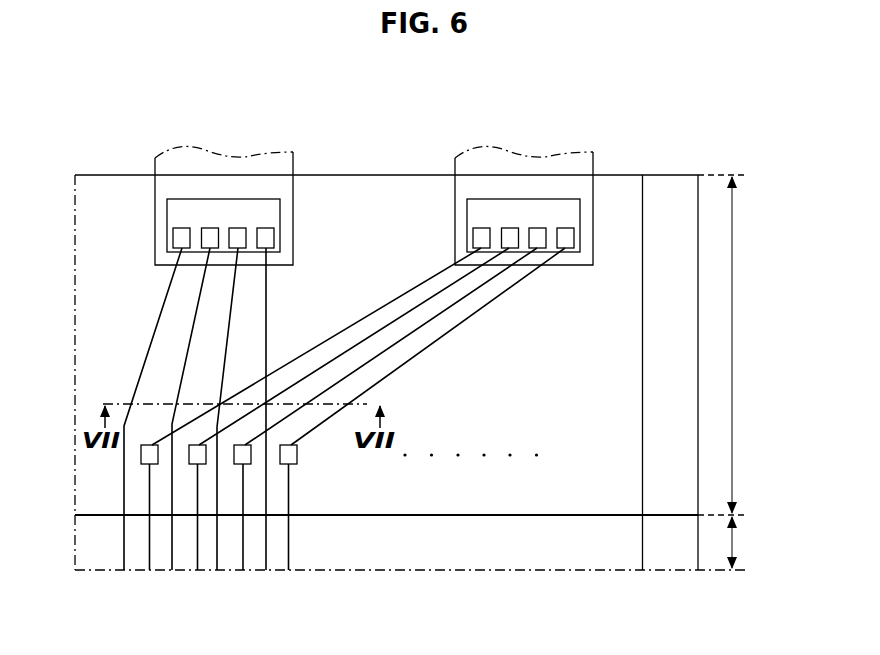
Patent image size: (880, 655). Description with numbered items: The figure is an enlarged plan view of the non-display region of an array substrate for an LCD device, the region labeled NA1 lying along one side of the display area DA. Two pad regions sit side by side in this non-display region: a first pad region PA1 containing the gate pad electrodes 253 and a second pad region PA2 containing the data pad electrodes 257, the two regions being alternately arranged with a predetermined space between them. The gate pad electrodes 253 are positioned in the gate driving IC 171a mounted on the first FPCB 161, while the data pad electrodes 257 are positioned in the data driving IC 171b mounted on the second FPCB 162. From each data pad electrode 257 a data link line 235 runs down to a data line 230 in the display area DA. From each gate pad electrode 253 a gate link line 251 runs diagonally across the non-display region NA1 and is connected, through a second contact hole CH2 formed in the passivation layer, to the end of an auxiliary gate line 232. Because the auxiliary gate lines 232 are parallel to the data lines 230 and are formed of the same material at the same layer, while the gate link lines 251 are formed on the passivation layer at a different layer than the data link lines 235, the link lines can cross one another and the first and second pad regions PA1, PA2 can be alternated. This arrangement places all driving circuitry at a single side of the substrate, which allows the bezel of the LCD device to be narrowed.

The first FPCB 161 is at (488, 163).
The second FPCB 162 is at (178, 163).
The gate driving IC 171a is at (530, 210).
The data driving IC 171b is at (240, 210).
The gate pad electrode 253 is at (477, 240).
The data pad electrode 257 is at (177, 240).
The gate link line 251 is at (465, 323).
The data link line 235 is at (268, 292).
The data line 230 is at (266, 536).
The auxiliary gate line 232 is at (288, 535).
The second contact hole CH2 is at (146, 442).
The first pad region PA1 is at (575, 190).
The second pad region PA2 is at (275, 190).
The first non-display area NA1 is at (752, 345).
The display area DA is at (747, 542).